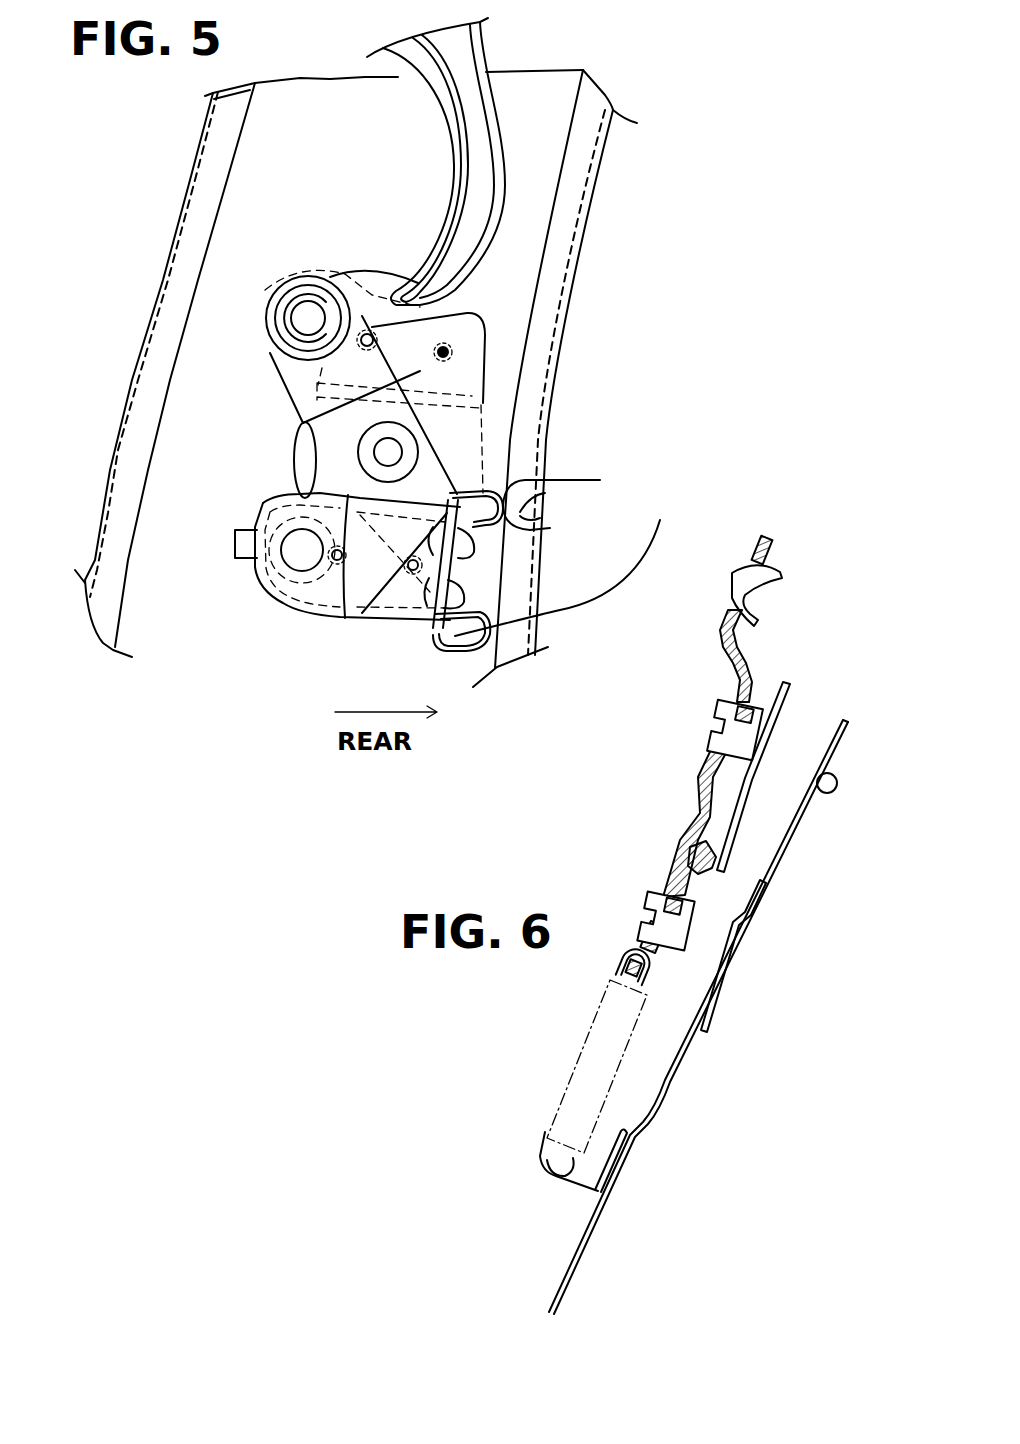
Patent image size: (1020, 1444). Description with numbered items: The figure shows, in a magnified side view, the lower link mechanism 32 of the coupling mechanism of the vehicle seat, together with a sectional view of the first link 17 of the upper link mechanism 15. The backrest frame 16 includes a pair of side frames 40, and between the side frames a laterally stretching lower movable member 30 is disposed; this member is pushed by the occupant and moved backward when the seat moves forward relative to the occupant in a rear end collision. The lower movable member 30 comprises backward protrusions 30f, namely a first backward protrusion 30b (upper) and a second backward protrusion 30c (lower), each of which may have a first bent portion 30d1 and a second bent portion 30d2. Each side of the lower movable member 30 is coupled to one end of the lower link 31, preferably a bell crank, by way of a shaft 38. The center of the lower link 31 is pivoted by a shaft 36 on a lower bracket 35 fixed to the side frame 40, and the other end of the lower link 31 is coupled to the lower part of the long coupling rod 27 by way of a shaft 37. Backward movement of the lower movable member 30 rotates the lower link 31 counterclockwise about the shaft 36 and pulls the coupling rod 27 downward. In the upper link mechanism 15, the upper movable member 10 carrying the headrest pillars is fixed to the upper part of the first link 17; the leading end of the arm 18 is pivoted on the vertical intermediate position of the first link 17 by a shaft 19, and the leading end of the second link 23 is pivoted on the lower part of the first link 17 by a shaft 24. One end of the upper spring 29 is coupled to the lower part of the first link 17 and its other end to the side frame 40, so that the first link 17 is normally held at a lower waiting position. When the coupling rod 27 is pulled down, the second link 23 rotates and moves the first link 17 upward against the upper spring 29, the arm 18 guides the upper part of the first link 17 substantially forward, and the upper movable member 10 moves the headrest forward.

In FIG. 5, the coupling rod 27 is at (447, 200).
In FIG. 5, the shaft 37 is at (313, 315).
In FIG. 5, the lower link mechanism 32 is at (221, 385).
In FIG. 5, the side frame 40 is at (587, 217).
In FIG. 6, the side frame 40 is at (622, 1150).
In FIG. 5, the backrest frame 16 is at (584, 307).
In FIG. 6, the backrest frame 16 is at (681, 1099).
In FIG. 5, the lower bracket 35 is at (465, 372).
In FIG. 5, the lower link 31 is at (322, 440).
In FIG. 5, the shaft 36 is at (392, 451).
In FIG. 5, the lower movable member 30 is at (455, 568).
In FIG. 5, the first bent portion 30d1 is at (490, 485).
In FIG. 5, the first backward protrusion 30b is at (600, 480).
In FIG. 5, the second bent portion 30d2 is at (538, 518).
In FIG. 5, the backward protrusions 30f is at (545, 493).
In FIG. 5, the second backward protrusion 30c is at (485, 642).
In FIG. 5, the shaft 38 is at (288, 564).
In FIG. 6, the upper movable member 10 is at (732, 582).
In FIG. 6, the shaft 19 is at (714, 712).
In FIG. 6, the arm 18 is at (752, 703).
In FIG. 6, the upper link mechanism 15 is at (649, 733).
In FIG. 6, the first link 17 is at (682, 820).
In FIG. 6, the shaft 24 is at (641, 903).
In FIG. 6, the second link 23 is at (697, 883).
In FIG. 6, the upper spring 29 is at (590, 1022).